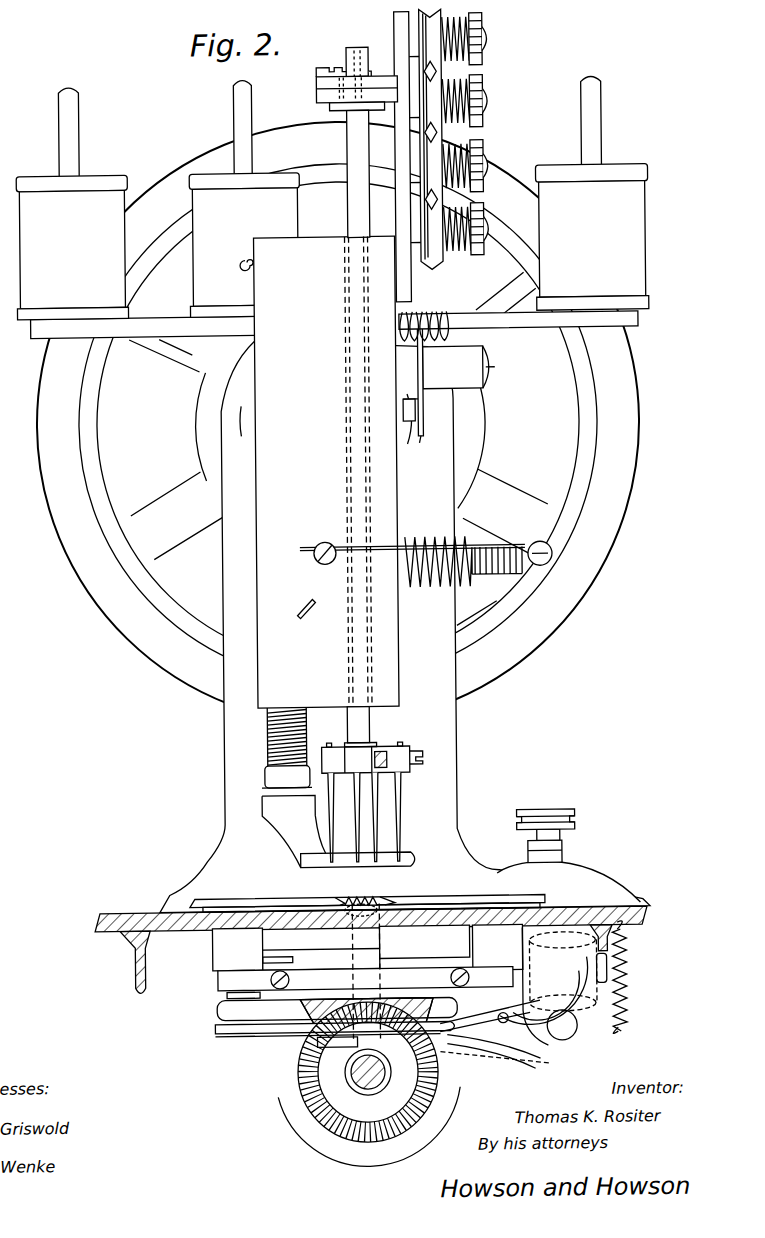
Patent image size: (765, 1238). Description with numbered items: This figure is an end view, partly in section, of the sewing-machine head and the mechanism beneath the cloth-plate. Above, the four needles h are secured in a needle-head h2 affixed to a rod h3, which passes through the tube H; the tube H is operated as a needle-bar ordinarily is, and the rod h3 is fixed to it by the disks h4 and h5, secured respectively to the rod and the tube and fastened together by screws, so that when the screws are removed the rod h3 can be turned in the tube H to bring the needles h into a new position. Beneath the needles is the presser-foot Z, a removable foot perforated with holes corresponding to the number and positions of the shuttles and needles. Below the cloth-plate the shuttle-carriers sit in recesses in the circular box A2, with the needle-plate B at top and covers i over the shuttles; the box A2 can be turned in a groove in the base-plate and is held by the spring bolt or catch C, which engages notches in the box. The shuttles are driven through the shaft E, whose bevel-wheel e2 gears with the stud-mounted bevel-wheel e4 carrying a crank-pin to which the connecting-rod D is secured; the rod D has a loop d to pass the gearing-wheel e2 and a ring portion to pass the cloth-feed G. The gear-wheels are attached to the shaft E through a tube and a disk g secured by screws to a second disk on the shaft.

The tube H is at (346, 139).
The rod h3 is at (358, 49).
The disk h4 is at (323, 74).
The disk h5 is at (320, 95).
The needle-head h2 is at (405, 766).
The needles h is at (370, 817).
The presser-foot Z is at (410, 855).
The covers i is at (260, 897).
The spring bolt or catch C is at (345, 900).
The cloth-feed G is at (578, 1057).
The needle-plate B is at (410, 899).
The circular box A2 is at (237, 949).
The bevel-wheel e4 is at (365, 984).
The connecting-rod D is at (337, 1031).
The loop d is at (323, 1044).
The shaft E is at (356, 1080).
The bevel-wheel e2 is at (440, 1160).
The disk g is at (495, 1035).